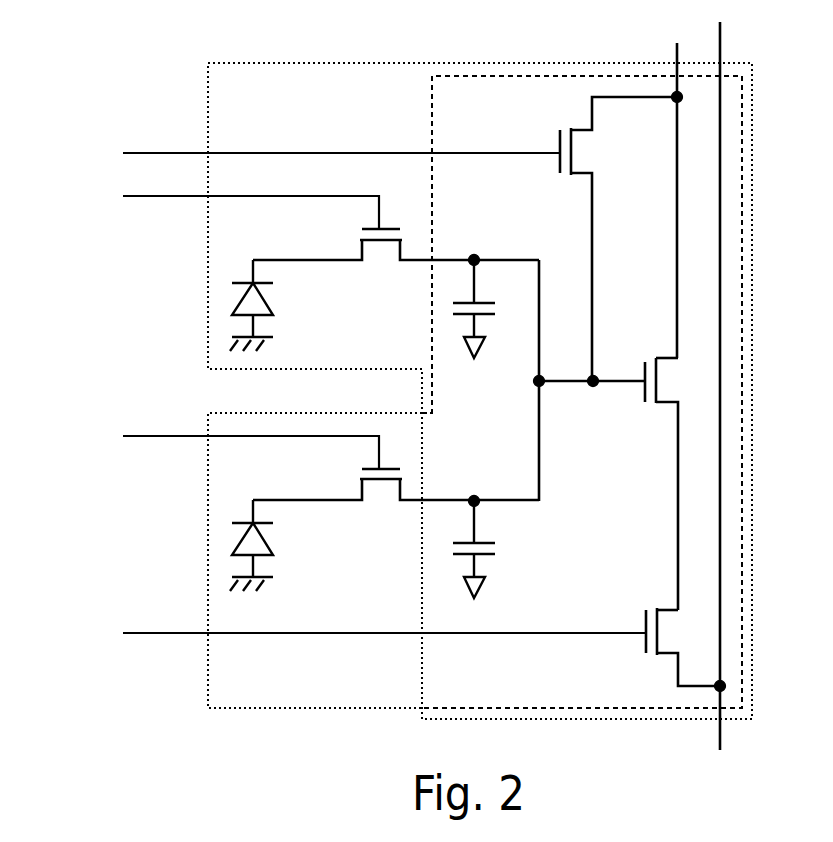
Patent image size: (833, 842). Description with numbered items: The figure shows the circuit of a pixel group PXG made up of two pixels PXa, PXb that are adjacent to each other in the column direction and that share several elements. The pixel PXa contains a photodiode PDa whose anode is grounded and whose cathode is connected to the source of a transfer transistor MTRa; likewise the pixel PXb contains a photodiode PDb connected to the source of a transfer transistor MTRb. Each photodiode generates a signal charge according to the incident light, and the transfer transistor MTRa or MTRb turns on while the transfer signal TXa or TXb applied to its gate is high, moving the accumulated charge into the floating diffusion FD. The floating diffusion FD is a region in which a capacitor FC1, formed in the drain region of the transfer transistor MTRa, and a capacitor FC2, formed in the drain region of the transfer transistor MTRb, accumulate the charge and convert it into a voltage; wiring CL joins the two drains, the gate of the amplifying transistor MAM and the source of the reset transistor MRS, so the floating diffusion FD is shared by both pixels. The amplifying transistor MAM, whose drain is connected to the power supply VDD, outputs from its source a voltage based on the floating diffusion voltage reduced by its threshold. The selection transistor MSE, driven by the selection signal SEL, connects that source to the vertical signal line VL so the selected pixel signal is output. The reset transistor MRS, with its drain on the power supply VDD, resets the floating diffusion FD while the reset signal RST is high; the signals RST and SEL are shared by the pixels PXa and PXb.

The pixel group PXG is at (180, 53).
The pixel PXa is at (208, 266).
The pixel PXb is at (208, 506).
The reset signal RST is at (321, 152).
The transfer signal TXa is at (230, 204).
The transfer signal TXb is at (230, 445).
The selection signal SEL is at (364, 632).
The power supply VDD is at (672, 186).
The vertical signal line VL is at (720, 527).
The reset transistor MRS is at (618, 239).
The transfer transistor MTRa is at (396, 241).
The transfer transistor MTRb is at (396, 481).
The photodiode PDa is at (273, 305).
The photodiode PDb is at (273, 545).
The floating diffusion FD is at (457, 255).
The capacitor FC1 is at (486, 309).
The capacitor FC2 is at (486, 549).
The wiring CL is at (541, 461).
The amplifying transistor MAM is at (650, 468).
The selection transistor MSE is at (672, 628).